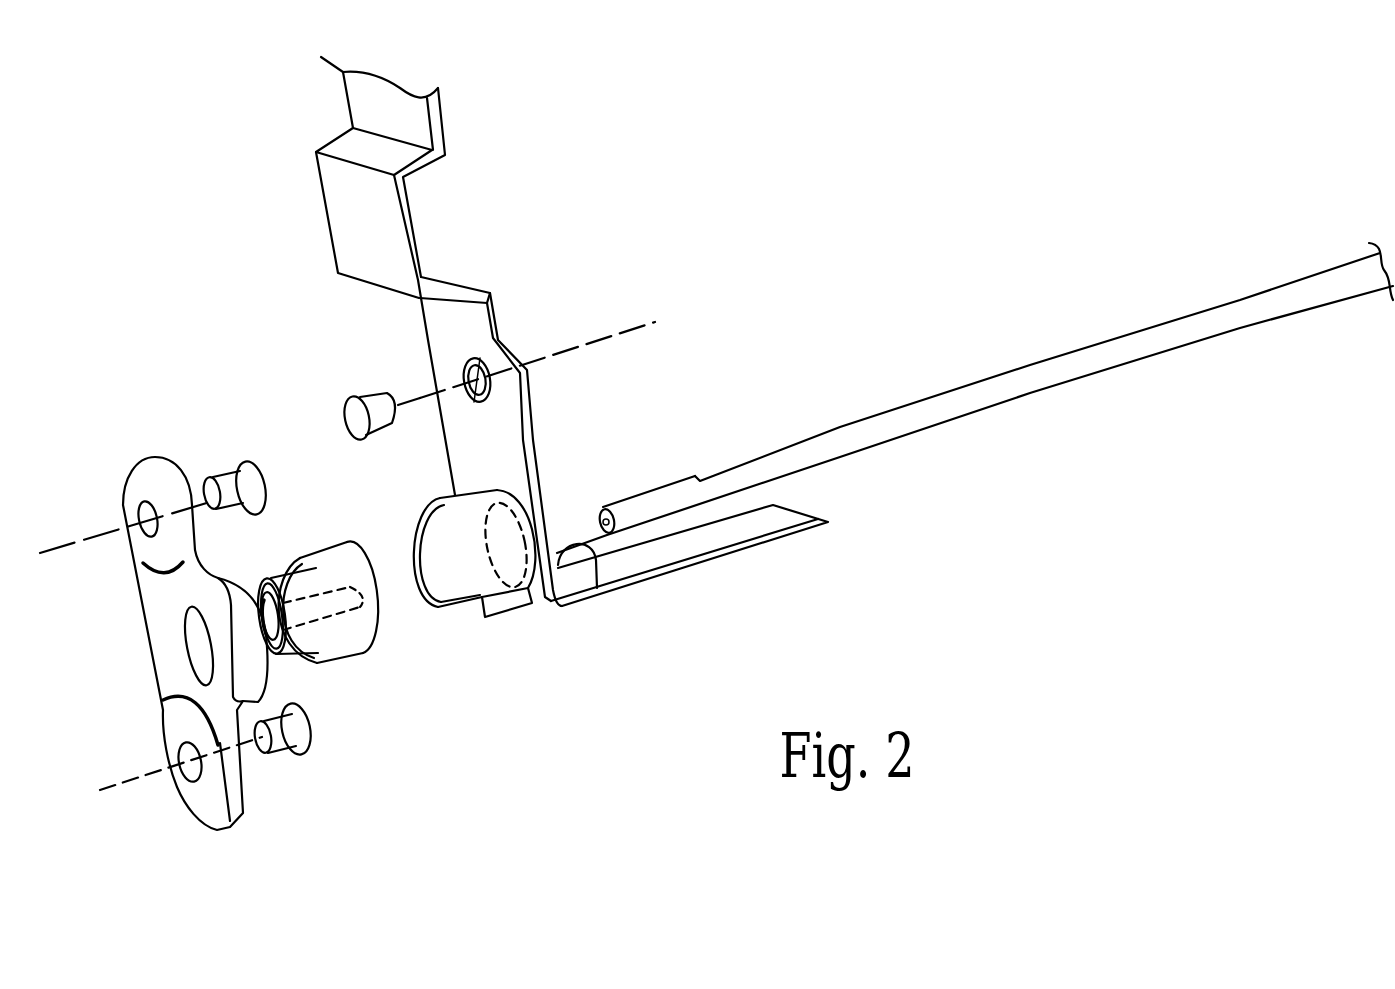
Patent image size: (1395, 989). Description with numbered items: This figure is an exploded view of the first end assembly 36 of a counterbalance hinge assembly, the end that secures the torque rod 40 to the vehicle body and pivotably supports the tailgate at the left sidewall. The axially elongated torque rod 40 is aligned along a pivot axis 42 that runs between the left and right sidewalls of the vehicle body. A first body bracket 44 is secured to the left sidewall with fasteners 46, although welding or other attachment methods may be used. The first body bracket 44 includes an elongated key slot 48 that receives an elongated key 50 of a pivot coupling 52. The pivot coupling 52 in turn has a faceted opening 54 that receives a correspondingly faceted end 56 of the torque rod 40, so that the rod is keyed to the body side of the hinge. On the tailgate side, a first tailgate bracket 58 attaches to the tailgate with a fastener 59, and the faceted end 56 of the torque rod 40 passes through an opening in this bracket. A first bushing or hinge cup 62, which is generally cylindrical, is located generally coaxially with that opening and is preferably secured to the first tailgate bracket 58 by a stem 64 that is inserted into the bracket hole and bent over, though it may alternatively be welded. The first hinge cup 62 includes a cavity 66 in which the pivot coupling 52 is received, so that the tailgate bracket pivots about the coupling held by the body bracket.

The first end assembly 36 is at (235, 331).
The torque rod 40 is at (896, 443).
The pivot axis 42 is at (1046, 372).
The first body bracket 44 is at (148, 662).
The fasteners 46 is at (248, 470).
The elongated key slot 48 is at (182, 613).
The elongated key 50 is at (290, 558).
The pivot coupling 52 is at (359, 655).
The faceted opening 54 is at (258, 587).
The faceted end 56 is at (629, 497).
The first tailgate bracket 58 is at (672, 577).
The fastener 59 is at (370, 402).
The first hinge cup 62 is at (498, 614).
The stem 64 is at (597, 588).
The cavity 66 is at (458, 578).